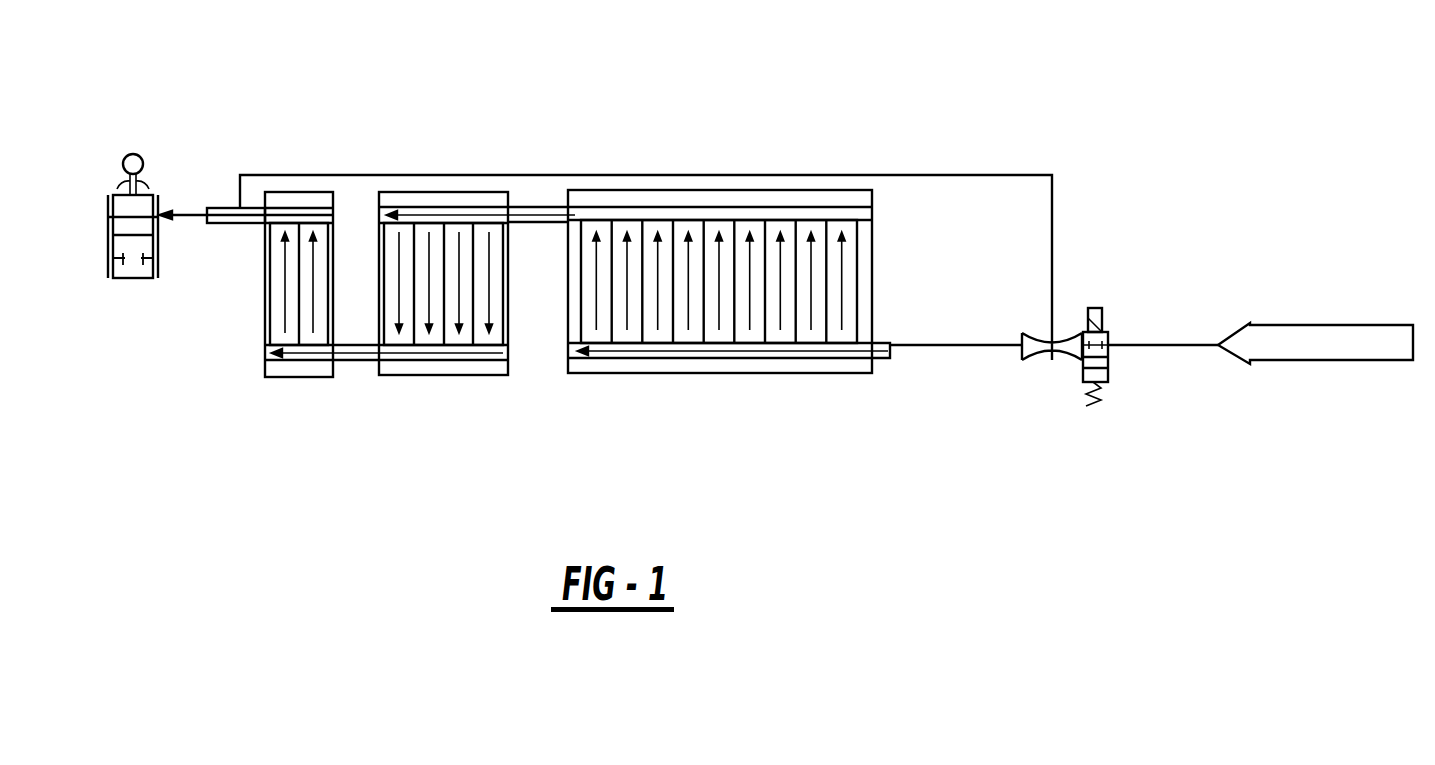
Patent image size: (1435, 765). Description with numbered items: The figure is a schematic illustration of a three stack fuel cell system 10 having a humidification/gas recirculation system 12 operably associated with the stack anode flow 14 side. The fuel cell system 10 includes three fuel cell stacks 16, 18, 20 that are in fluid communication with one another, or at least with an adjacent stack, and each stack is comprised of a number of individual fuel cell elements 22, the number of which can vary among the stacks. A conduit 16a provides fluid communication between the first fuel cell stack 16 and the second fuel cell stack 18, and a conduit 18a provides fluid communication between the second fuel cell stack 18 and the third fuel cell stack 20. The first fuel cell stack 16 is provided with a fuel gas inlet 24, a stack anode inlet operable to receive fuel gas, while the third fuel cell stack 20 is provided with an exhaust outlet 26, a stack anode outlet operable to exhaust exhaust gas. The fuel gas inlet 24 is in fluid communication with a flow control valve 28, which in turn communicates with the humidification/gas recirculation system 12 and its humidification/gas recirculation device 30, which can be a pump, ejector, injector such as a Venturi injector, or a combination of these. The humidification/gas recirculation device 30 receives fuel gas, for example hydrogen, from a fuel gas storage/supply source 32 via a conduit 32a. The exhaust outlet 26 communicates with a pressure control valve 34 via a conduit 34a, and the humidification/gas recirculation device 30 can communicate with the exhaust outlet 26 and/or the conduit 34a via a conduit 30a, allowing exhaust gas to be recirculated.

The three stack fuel cell system 10 is at (522, 73).
The humidification/gas recirculation system 12 is at (1153, 237).
The stack anode flow 14 is at (642, 118).
The fuel cell stack 16 is at (707, 246).
The conduit 16a is at (537, 223).
The fuel cell stack 18 is at (475, 197).
The conduit 18a is at (363, 363).
The fuel cell stack 20 is at (250, 255).
The fuel cell elements 22 is at (283, 313).
The fuel gas inlet 24 is at (890, 360).
The exhaust outlet 26 is at (213, 203).
The flow control valve 28 is at (1108, 380).
The humidification/gas recirculation device 30 is at (1057, 362).
The conduit 30a is at (1052, 200).
The fuel gas storage/supply source 32 is at (1380, 323).
The conduit 32a is at (1162, 347).
The pressure control valve 34 is at (141, 218).
The conduit 34a is at (187, 223).